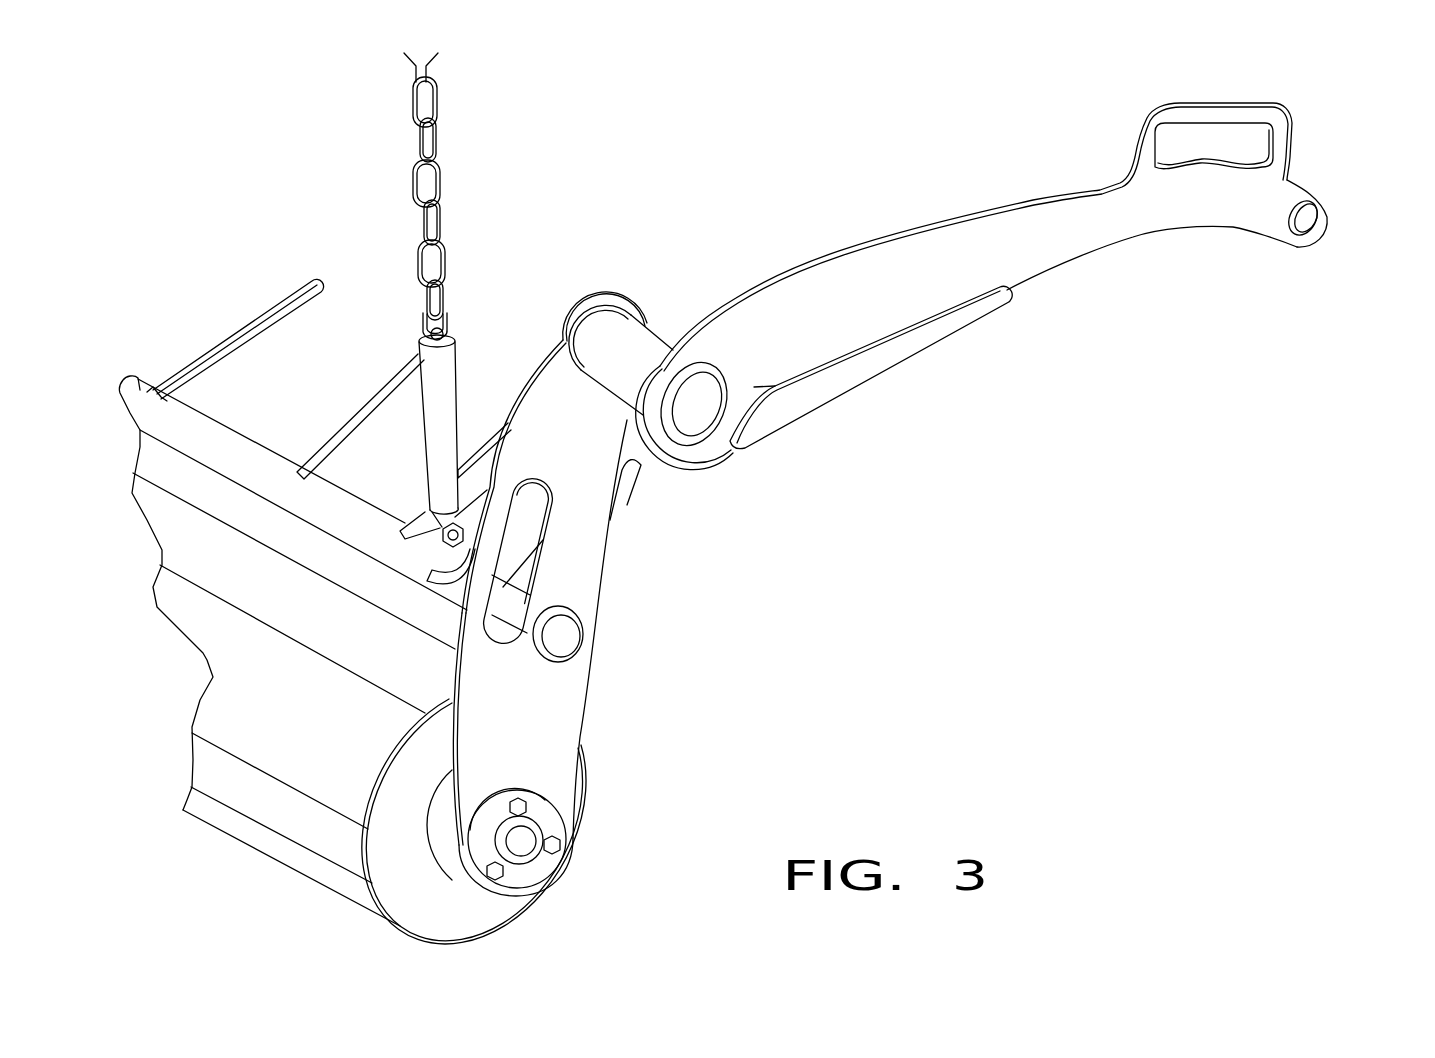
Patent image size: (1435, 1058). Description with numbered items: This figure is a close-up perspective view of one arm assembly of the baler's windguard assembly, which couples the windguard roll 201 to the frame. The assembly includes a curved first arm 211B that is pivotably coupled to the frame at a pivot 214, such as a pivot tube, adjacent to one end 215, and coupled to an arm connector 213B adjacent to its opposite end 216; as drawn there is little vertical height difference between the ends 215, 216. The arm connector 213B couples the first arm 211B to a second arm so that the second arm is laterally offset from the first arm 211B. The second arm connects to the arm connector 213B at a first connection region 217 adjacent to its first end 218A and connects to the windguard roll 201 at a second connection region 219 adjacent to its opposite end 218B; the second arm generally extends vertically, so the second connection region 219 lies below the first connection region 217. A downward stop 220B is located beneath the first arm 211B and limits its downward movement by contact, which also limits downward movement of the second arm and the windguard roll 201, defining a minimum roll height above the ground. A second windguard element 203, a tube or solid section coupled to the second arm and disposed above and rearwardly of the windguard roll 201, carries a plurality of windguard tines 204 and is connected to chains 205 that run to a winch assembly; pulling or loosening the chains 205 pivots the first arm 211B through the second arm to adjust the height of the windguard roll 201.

The windguard roll 201 is at (330, 635).
The second windguard element 203 is at (355, 492).
The windguard tines 204 is at (320, 303).
The chains 205 is at (443, 178).
The first arm 211B is at (962, 240).
The arm connector 213B is at (652, 352).
The pivot 214 is at (1314, 232).
The end 215 is at (1322, 193).
The opposite end 216 is at (683, 467).
The first connection region 217 is at (582, 318).
The first end 218A is at (616, 290).
The opposite end 218B is at (517, 890).
The second connection region 219 is at (553, 821).
The downward stop 220B is at (888, 378).